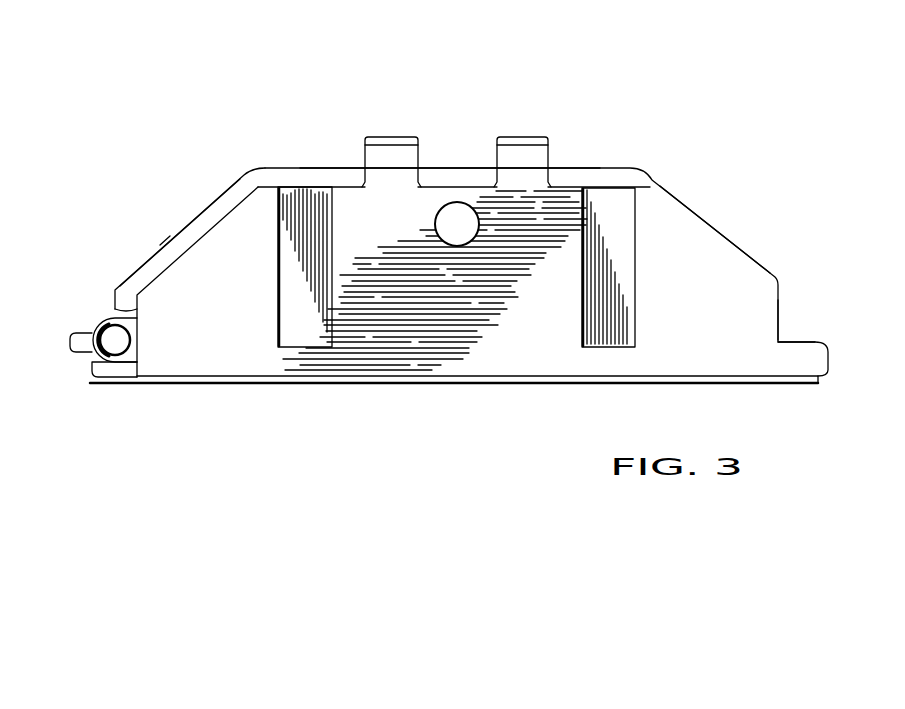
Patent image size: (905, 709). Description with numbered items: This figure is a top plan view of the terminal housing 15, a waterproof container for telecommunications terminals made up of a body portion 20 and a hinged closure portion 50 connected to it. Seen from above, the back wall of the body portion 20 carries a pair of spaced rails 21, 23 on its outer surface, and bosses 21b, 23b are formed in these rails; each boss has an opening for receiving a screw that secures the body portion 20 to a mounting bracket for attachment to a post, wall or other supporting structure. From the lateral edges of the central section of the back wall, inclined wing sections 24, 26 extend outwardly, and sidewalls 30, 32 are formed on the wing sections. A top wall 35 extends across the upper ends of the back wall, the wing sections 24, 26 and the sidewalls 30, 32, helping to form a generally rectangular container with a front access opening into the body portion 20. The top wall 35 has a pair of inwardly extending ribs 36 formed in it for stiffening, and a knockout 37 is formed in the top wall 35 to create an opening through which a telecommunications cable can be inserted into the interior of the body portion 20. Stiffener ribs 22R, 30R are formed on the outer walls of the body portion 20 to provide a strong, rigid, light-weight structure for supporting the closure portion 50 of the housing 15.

The terminal housing 15 is at (256, 159).
The body portion 20 is at (682, 193).
The rail 21 is at (382, 172).
The boss 21b is at (392, 137).
The stiffener rib 22R is at (582, 175).
The rail 23 is at (530, 162).
The boss 23b is at (527, 138).
The inclined wing section 24 is at (217, 228).
The inclined wing section 26 is at (718, 237).
The sidewall 30 is at (112, 307).
The stiffener rib 30R is at (160, 247).
The sidewall 32 is at (780, 315).
The top wall 35 is at (718, 342).
The inwardly extending rib 36 is at (292, 232).
The knockout 37 is at (455, 232).
The hinged closure portion 50 is at (397, 390).